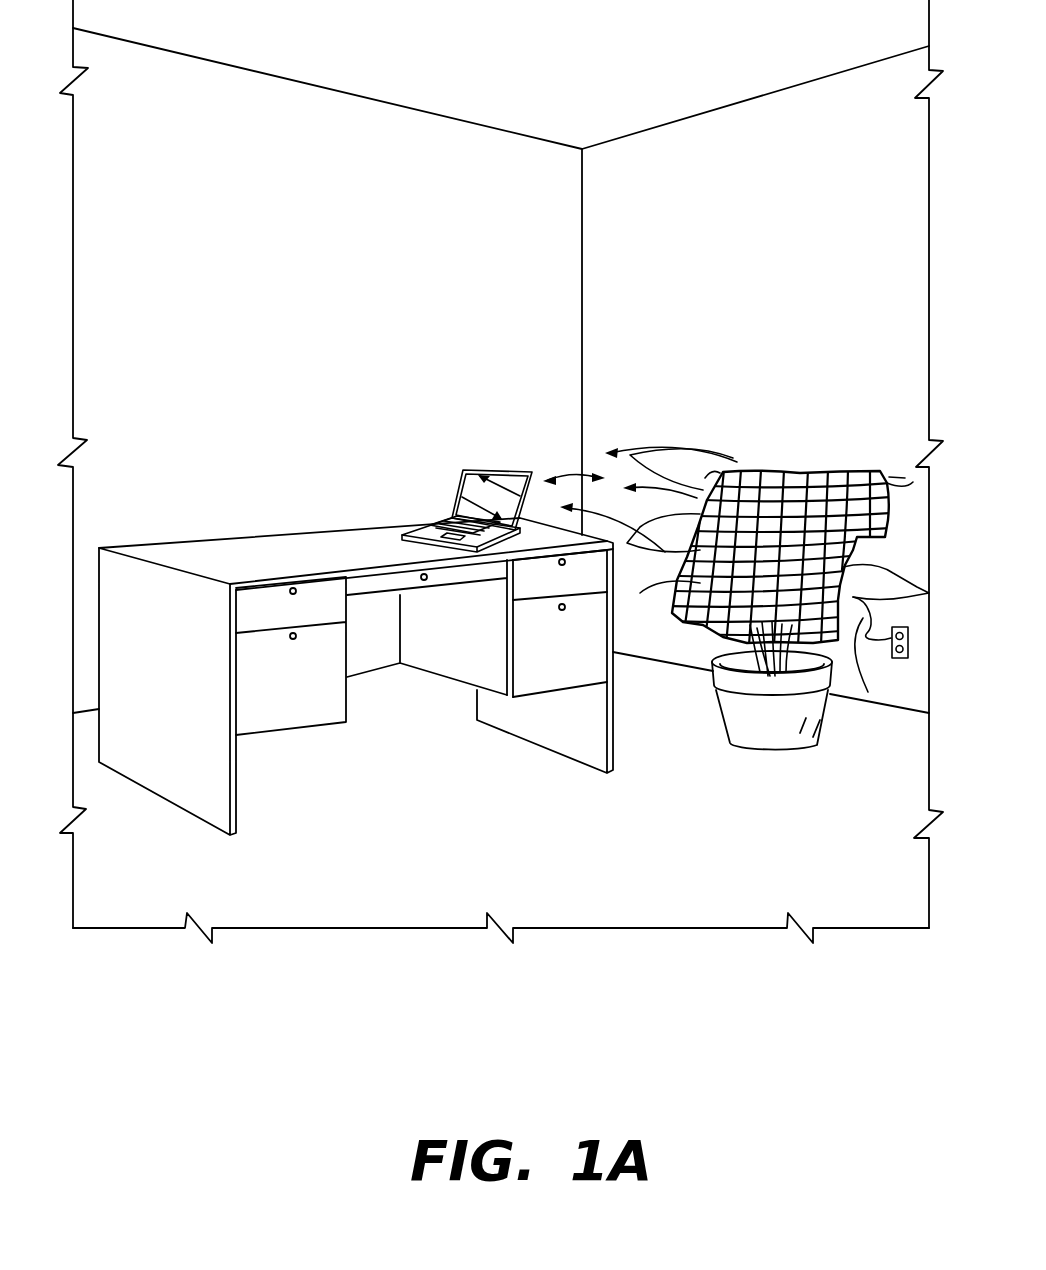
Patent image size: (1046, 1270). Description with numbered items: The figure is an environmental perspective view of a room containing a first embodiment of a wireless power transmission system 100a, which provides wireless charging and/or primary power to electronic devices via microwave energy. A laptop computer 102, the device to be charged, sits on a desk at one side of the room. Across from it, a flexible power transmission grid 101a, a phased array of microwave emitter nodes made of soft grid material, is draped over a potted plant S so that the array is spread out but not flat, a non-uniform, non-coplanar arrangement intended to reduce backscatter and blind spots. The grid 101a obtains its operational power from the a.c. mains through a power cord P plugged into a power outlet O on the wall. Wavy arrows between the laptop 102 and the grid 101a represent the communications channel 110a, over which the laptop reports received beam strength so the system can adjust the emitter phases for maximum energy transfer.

The wireless power transmission system 100a is at (838, 362).
The power transmission grid 101a is at (756, 460).
The laptop computer 102 is at (460, 490).
The communications channel 110a is at (560, 473).
The potted plant S is at (720, 722).
The power cord P is at (868, 692).
The power outlet O is at (896, 662).